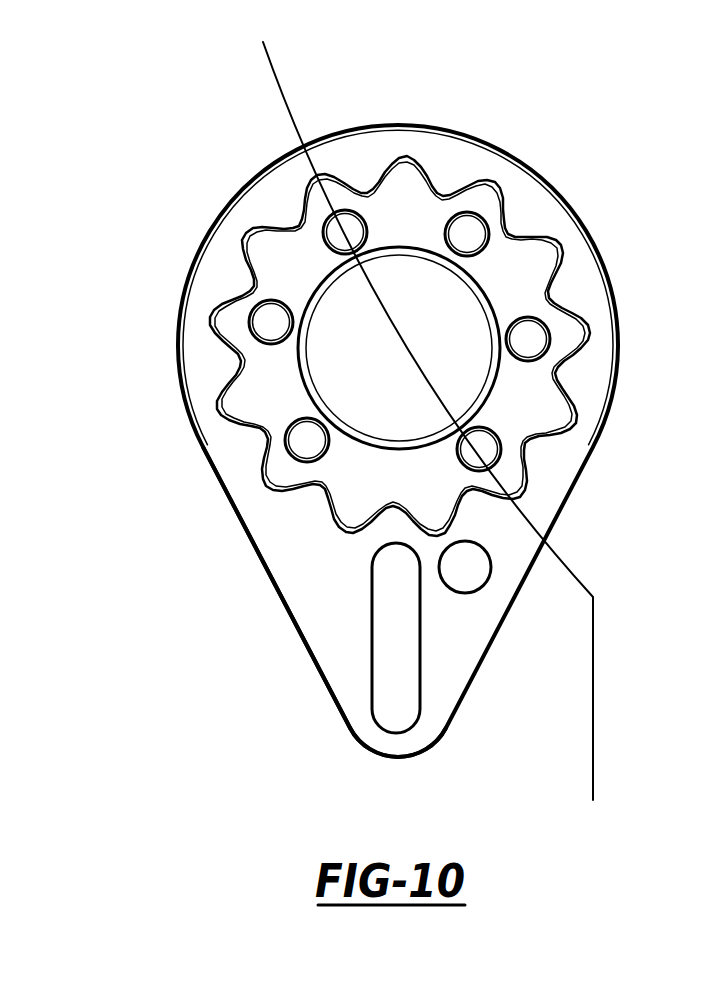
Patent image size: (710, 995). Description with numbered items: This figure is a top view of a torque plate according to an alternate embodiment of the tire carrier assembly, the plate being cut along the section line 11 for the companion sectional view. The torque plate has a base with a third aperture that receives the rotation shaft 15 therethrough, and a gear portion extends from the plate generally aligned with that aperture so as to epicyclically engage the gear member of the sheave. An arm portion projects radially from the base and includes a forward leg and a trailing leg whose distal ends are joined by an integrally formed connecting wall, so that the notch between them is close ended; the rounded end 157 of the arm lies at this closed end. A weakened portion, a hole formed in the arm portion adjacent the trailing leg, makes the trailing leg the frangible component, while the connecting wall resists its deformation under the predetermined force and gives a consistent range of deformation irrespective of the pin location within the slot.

The rotation shaft 15 is at (375, 378).
The rounded tip 157 is at (393, 747).
The section line 11- 11 is at (270, 53).